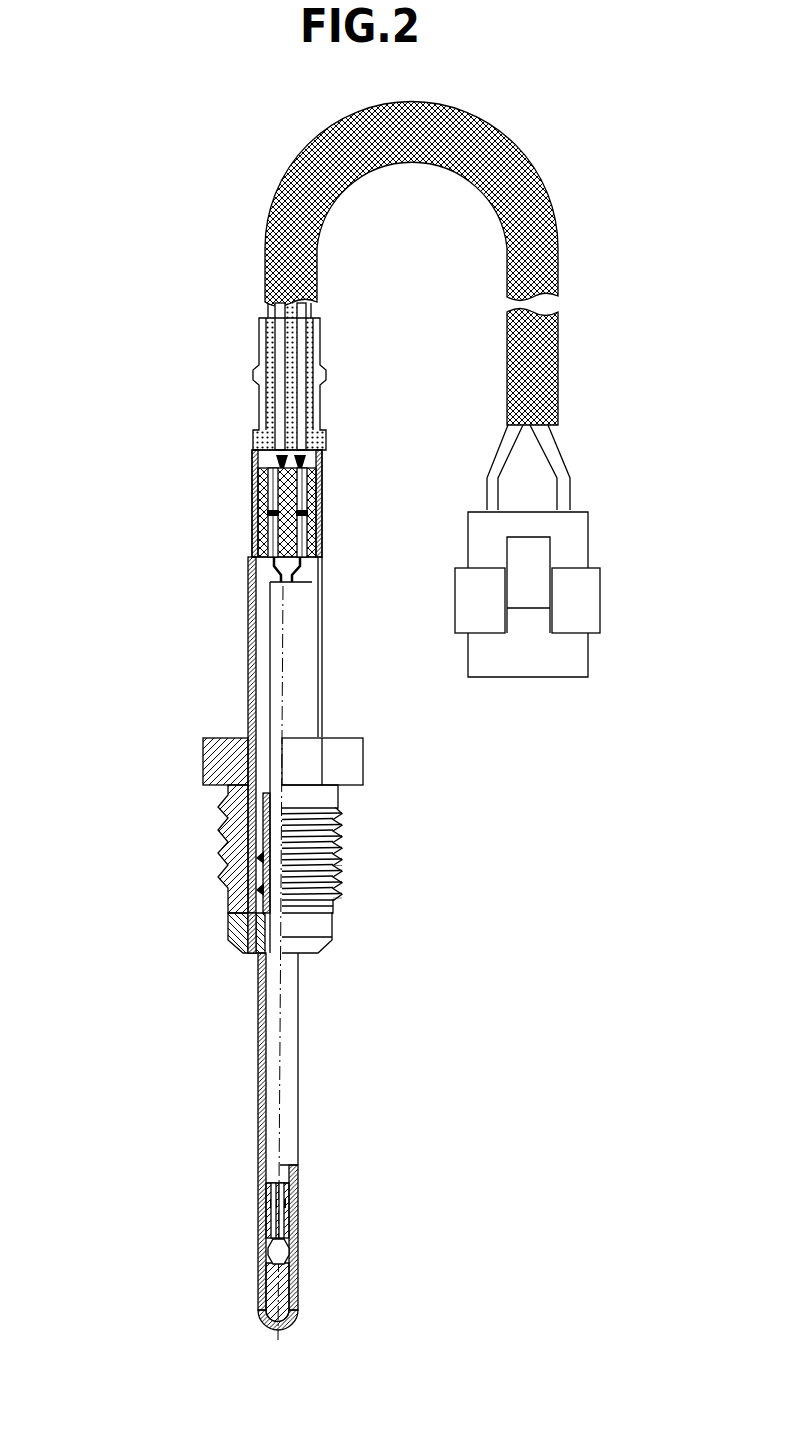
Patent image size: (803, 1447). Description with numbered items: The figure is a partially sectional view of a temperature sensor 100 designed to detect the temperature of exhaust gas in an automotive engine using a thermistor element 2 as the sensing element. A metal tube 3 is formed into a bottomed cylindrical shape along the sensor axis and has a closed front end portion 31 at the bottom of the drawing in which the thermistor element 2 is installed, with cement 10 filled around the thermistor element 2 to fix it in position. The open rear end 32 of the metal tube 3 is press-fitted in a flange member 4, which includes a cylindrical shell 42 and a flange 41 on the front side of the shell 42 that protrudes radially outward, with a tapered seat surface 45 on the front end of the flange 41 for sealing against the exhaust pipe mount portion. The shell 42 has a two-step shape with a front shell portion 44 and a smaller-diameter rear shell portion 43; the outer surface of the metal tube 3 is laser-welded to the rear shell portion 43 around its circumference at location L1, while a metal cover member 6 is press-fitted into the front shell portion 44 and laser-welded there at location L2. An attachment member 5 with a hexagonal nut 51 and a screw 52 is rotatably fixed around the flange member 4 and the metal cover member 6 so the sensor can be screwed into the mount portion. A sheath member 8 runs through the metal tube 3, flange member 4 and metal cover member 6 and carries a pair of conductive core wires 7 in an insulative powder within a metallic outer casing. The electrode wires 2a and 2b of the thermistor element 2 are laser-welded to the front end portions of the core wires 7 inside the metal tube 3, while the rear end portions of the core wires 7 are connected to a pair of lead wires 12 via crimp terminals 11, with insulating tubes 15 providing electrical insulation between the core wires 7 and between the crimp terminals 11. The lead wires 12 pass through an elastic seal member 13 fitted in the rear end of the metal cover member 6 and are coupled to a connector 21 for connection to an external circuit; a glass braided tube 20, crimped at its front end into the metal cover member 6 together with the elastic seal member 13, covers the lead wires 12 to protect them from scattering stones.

The temperature sensor 100 is at (212, 278).
The glass braided tube 20 is at (317, 276).
The connector 21 is at (577, 545).
The elastic seal member 13 is at (321, 380).
The lead wires 12 is at (277, 416).
The crimp terminals 11 is at (317, 502).
The insulating tubes 15 is at (258, 528).
The core wires 7 is at (318, 578).
The metal cover member 6 is at (251, 607).
The attachment member 5 is at (347, 842).
The hexagonal nut 51 is at (352, 763).
The screw 52 is at (345, 826).
The flange member 4 is at (156, 855).
The rear end 32 is at (230, 793).
The cylindrical shell 42 is at (176, 853).
The rear shell portion 43 is at (261, 852).
The front shell portion 44 is at (261, 882).
The flange 41 is at (230, 916).
The tapered seat surface 45 is at (230, 948).
The laser-welding location L1 is at (345, 865).
The laser-welding location L2 is at (340, 898).
The sheath member 8 is at (269, 1107).
The metal tube 3 is at (241, 1141).
The closed front end portion 31 is at (262, 1312).
The thermistor element 2 is at (288, 1248).
The electrode wire 2a is at (292, 1213).
The electrode wire 2b is at (272, 1227).
The cement 10 is at (283, 1288).